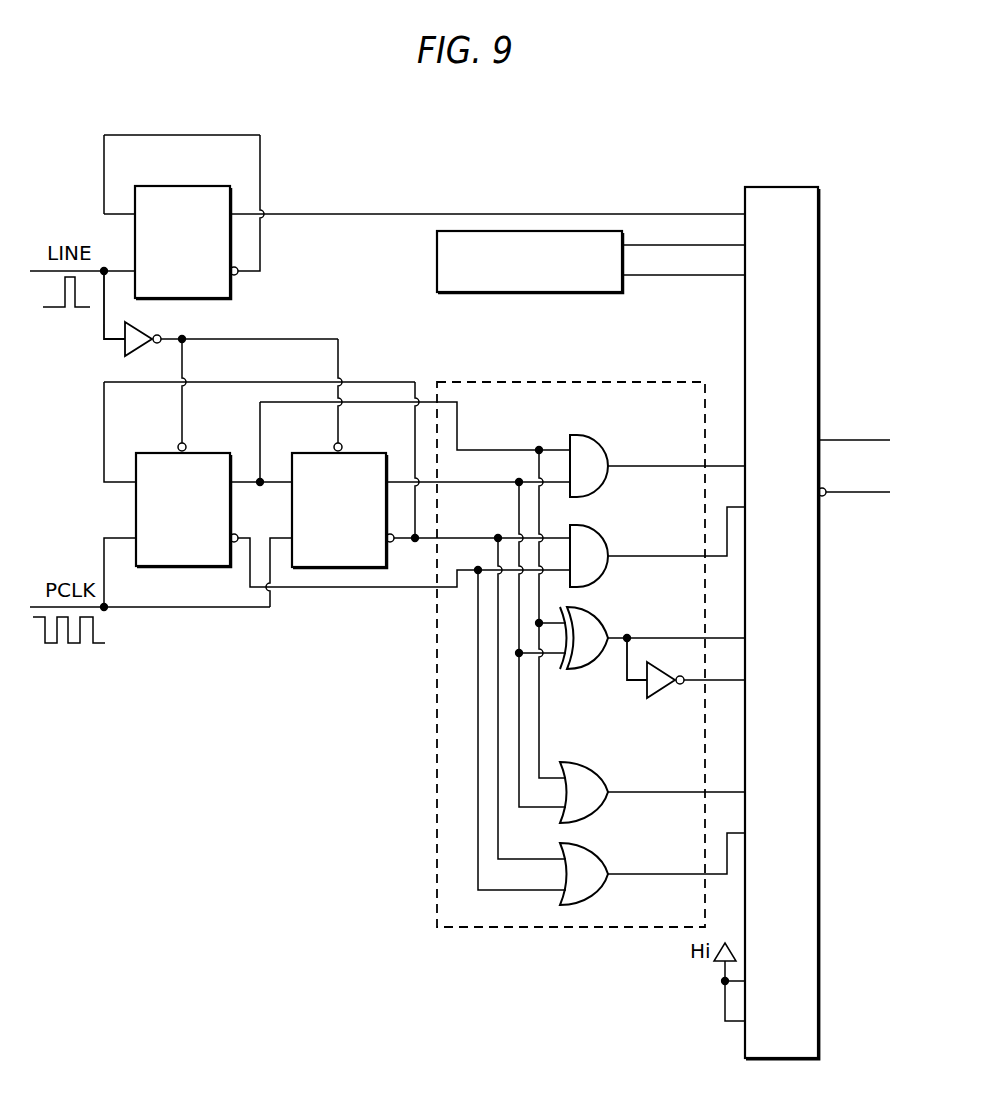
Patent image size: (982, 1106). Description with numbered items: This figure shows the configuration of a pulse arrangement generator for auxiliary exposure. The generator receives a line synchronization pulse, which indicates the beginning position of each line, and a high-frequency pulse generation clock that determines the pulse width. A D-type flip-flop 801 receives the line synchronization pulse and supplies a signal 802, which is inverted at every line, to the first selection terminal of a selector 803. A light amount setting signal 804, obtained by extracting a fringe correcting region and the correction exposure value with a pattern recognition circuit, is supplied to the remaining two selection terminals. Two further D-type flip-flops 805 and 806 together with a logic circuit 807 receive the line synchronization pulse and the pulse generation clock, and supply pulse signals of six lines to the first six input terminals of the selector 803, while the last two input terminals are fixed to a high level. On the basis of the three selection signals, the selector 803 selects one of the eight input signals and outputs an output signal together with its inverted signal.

The D-type flip-flop 801 is at (184, 186).
The signal 802 is at (480, 212).
The selector 803 is at (786, 186).
The light amount setting signal 804 is at (437, 263).
The D-type flip-flop 805 is at (212, 453).
The D-type flip-flop 806 is at (368, 453).
The logic circuit 807 is at (574, 380).